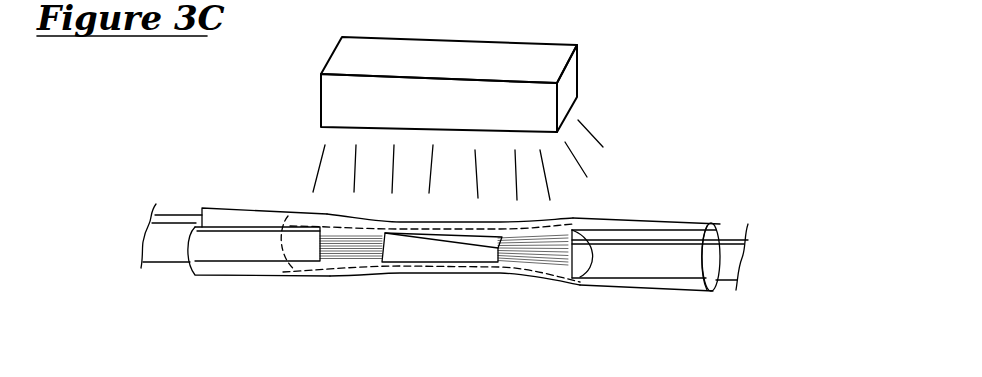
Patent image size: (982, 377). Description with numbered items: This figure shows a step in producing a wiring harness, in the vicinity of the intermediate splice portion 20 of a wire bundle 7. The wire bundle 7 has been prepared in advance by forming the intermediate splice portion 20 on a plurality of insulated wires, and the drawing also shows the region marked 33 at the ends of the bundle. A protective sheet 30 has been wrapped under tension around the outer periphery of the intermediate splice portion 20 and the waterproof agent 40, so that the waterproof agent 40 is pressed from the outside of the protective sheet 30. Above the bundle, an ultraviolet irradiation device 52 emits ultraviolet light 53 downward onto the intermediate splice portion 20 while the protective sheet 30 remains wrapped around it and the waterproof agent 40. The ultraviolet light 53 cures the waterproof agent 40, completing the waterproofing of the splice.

The wire bundle 7 is at (172, 220).
The intermediate splice portion 20 is at (437, 265).
The protective sheet 30 is at (248, 257).
The cable jacket 33 is at (187, 240).
The waterproof agent 40 is at (603, 257).
The ultraviolet irradiation device 52 is at (577, 82).
The ultraviolet light 53 is at (580, 163).